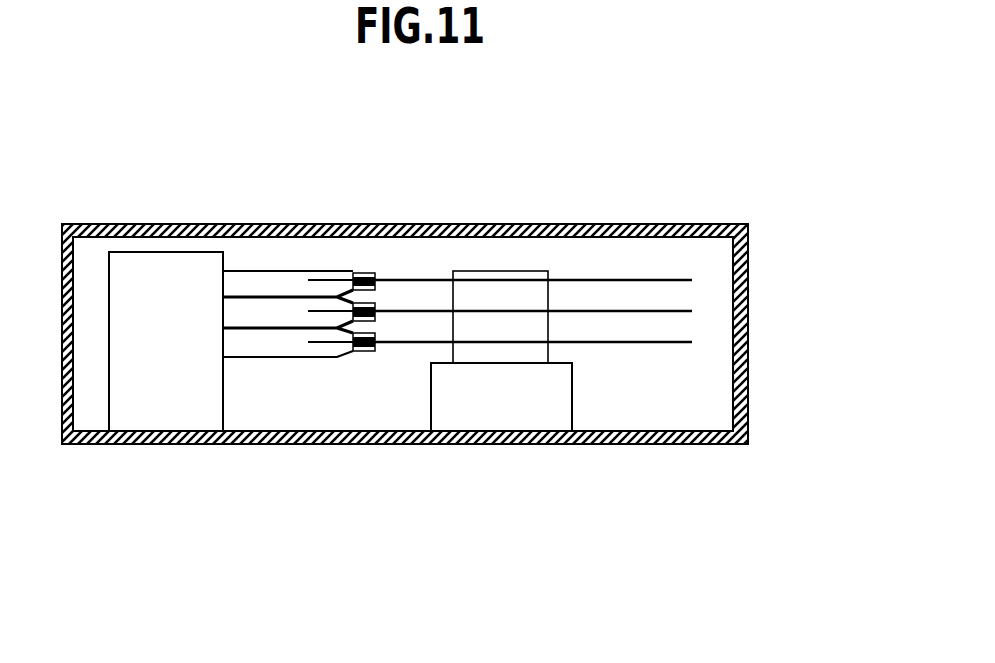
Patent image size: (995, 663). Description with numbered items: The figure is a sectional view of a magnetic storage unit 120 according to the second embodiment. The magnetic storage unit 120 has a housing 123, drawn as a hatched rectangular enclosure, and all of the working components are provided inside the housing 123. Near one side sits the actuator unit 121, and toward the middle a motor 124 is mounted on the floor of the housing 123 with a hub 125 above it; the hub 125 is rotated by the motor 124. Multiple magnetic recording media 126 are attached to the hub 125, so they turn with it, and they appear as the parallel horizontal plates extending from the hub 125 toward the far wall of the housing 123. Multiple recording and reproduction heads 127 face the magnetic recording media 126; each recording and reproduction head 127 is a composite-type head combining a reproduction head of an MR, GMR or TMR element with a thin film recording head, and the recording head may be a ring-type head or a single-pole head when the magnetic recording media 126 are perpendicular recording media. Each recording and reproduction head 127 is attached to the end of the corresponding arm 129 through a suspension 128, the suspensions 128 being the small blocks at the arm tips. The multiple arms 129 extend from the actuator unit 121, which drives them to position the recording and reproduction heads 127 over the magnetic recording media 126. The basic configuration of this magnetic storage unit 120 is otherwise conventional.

The magnetic storage unit 120 is at (760, 186).
The actuator unit 121 is at (167, 415).
The housing 123 is at (748, 404).
The motor 124 is at (483, 415).
The hub 125 is at (495, 271).
The magnetic recording media 126 is at (660, 278).
The recording and reproduction heads 127 is at (373, 270).
The suspensions 128 is at (346, 272).
The arms 129 is at (229, 270).